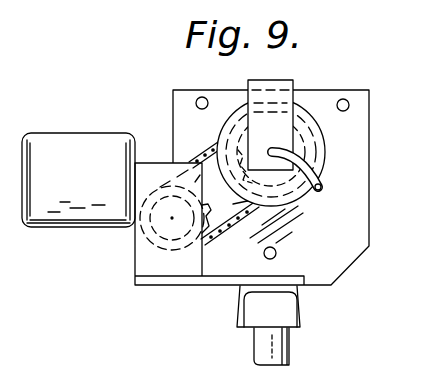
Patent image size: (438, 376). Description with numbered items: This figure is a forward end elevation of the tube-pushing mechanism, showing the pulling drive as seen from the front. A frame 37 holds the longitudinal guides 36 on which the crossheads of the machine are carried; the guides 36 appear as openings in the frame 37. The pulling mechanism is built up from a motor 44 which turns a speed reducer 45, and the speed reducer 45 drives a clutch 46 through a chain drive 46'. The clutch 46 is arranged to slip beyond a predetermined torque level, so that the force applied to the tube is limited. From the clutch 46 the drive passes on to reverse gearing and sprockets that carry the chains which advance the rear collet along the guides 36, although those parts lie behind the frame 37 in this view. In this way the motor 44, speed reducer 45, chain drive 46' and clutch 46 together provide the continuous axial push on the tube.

The longitudinal guides 36 is at (349, 103).
The frame 37 is at (362, 184).
The motor 44 is at (87, 118).
The speed reducer 45 is at (153, 168).
The clutch 46 is at (284, 134).
The chain drive 46' is at (219, 183).